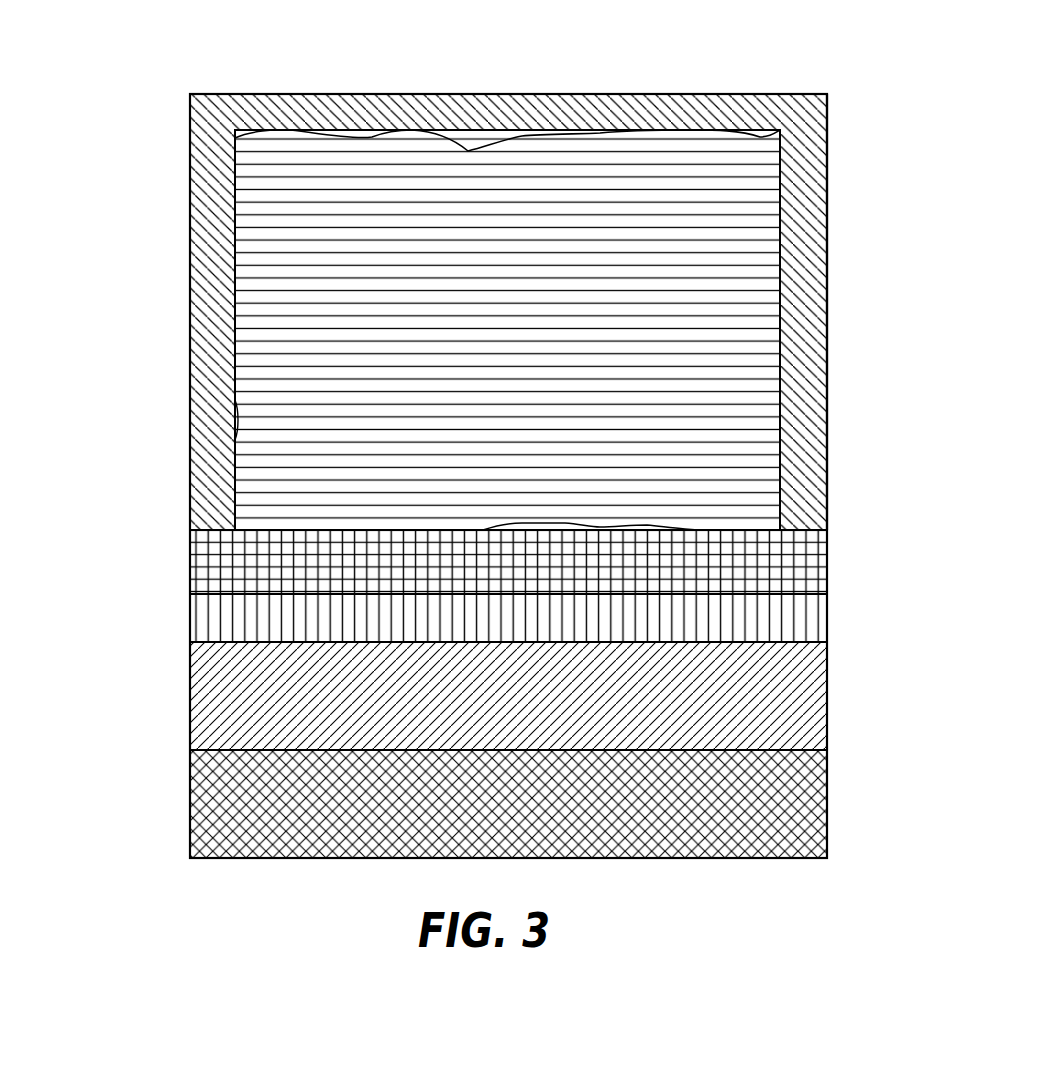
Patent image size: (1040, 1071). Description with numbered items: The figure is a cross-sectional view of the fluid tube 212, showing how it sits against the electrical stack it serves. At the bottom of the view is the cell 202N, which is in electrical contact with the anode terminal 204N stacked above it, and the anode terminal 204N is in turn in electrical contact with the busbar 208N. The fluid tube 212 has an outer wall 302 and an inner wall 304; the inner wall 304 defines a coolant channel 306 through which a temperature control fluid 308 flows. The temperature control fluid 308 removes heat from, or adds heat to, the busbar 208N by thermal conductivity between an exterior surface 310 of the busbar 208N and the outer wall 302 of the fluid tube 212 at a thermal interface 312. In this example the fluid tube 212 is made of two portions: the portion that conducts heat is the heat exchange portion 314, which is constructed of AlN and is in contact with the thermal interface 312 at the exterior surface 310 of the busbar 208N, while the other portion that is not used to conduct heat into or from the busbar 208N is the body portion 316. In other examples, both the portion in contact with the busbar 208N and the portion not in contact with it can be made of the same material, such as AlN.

The fluid tube 212 is at (738, 94).
The outer wall 302 is at (827, 422).
The inner wall 304 is at (780, 330).
The coolant channel 306 is at (702, 238).
The temperature control fluid 308 is at (298, 295).
The exterior surface 310 is at (772, 595).
The thermal interface 312 is at (830, 593).
The heat exchange portion 314 is at (790, 550).
The body portion 316 is at (805, 387).
The busbar 208N is at (190, 622).
The anode terminal 204N is at (190, 680).
The cell 202N is at (190, 803).